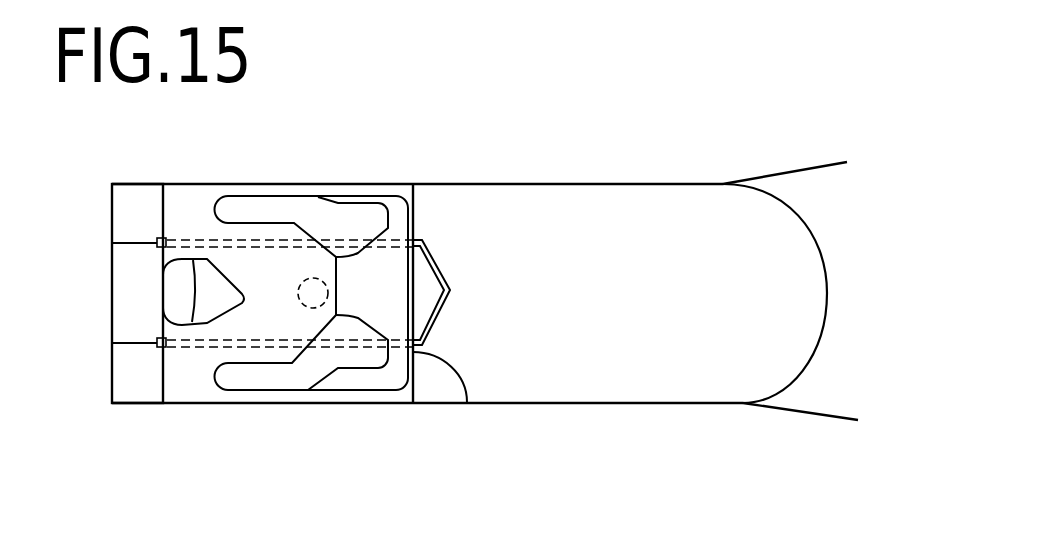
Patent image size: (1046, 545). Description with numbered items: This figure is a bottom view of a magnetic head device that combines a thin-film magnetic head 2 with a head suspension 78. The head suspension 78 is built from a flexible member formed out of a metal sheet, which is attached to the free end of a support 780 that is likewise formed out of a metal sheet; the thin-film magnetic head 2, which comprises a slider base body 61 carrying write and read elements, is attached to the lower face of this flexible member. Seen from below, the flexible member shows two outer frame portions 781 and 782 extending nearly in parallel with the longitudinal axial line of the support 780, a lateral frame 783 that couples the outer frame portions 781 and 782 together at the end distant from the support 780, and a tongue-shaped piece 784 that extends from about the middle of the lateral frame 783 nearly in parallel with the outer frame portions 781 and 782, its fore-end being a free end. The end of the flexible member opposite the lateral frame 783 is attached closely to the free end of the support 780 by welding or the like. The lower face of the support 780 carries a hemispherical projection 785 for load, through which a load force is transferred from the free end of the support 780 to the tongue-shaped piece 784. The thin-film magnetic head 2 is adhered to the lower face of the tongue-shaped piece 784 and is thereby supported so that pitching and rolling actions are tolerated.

The thin-film magnetic head 2 is at (251, 426).
The slider base body 61 is at (467, 395).
The head suspension 78 is at (635, 394).
The support 780 is at (819, 172).
The outer frame portion 781 is at (140, 197).
The outer frame portion 782 is at (315, 405).
The lateral frame 783 is at (133, 313).
The tongue-shaped piece 784 is at (417, 310).
The projection for load 785 is at (317, 282).